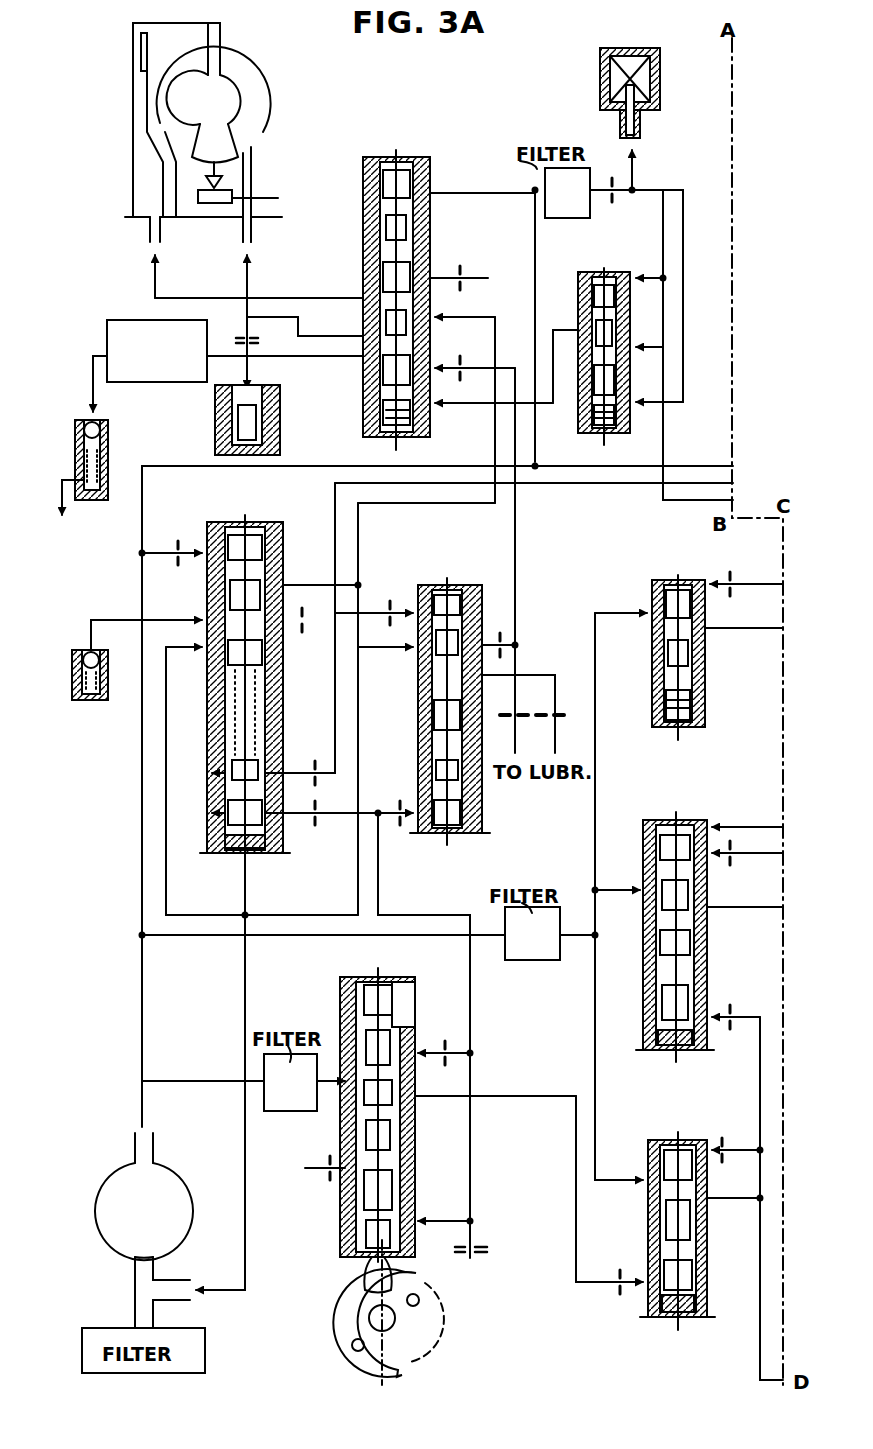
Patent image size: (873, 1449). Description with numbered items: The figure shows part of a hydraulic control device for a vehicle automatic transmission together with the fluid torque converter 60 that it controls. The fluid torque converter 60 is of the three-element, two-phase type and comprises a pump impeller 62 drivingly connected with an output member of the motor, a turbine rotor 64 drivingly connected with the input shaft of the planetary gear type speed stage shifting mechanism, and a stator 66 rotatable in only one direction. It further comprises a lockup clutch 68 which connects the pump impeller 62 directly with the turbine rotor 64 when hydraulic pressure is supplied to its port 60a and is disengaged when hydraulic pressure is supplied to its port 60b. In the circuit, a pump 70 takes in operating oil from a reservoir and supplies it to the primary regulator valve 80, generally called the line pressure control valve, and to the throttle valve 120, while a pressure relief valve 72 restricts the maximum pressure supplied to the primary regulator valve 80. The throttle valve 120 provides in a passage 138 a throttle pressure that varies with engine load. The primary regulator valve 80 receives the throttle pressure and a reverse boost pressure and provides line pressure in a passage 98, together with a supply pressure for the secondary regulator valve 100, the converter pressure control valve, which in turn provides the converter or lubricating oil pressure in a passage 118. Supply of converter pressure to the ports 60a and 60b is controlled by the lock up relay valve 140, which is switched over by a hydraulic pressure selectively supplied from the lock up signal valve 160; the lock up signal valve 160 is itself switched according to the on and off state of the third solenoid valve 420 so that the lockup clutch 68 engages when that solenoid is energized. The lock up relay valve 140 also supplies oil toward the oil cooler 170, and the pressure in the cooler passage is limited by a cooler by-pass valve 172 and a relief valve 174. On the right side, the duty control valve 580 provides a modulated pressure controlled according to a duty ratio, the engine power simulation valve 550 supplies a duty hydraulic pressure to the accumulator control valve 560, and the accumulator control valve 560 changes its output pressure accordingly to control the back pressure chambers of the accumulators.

The fluid torque converter 60 is at (191, 139).
The pump impeller 62 is at (255, 70).
The turbine rotor 64 is at (162, 104).
The stator 66 is at (244, 143).
The lockup clutch 68 is at (140, 58).
The port 60a is at (252, 231).
The port 60b is at (148, 229).
The pump 70 is at (124, 1171).
The pressure relief valve 72 is at (78, 725).
The primary regulator valve 80 is at (285, 862).
The passage 98 is at (140, 516).
The secondary regulator valve 100 is at (450, 842).
The passage 118 is at (500, 636).
The throttle valve 120 is at (336, 1223).
The passage 138 is at (472, 1097).
The lock up relay valve 140 is at (430, 420).
The lock up signal valve 160 is at (648, 420).
The oil cooler 170 is at (124, 321).
The cooler by-pass valve 172 is at (208, 430).
The relief valve 174 is at (80, 432).
The third solenoid valve 420 is at (654, 124).
The engine power simulation valve 550 is at (662, 1326).
The accumulator control valve 560 is at (640, 984).
The duty control valve 580 is at (708, 698).